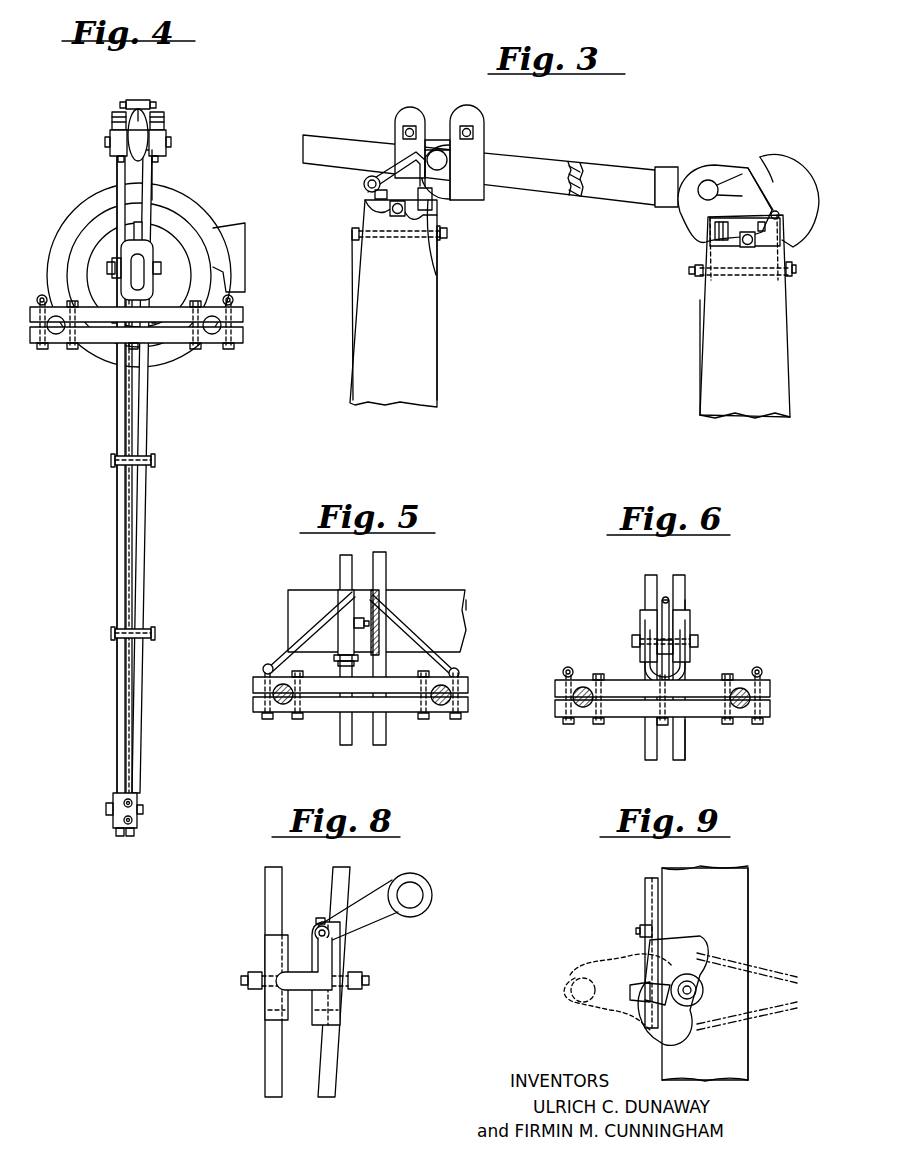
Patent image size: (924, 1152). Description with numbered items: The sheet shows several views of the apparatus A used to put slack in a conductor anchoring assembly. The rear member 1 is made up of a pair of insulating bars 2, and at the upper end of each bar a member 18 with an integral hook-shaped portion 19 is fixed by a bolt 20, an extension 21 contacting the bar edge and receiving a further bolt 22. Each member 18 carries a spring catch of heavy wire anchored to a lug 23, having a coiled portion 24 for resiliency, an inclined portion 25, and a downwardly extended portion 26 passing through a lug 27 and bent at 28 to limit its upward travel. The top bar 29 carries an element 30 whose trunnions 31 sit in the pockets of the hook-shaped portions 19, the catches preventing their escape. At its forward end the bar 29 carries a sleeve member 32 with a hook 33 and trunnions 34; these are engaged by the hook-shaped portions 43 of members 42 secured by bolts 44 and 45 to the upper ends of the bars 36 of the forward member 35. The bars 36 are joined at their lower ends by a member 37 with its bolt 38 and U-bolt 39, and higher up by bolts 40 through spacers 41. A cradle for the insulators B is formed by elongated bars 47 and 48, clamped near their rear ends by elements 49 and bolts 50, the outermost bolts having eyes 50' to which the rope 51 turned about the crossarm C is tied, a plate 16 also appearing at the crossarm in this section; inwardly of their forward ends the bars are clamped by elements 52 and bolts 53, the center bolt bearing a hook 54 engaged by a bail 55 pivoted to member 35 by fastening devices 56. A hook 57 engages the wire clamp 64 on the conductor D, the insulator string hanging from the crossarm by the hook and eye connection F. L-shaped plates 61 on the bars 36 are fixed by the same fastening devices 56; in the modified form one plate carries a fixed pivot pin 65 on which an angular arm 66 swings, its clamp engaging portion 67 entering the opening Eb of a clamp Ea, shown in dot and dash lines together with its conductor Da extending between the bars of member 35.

In FIG. 3, the member 1 is at (445, 373).
In FIG. 5, the member 1 is at (384, 750).
In FIG. 3, the bars 2 is at (360, 350).
In FIG. 5, the bars 2 is at (345, 745).
In FIG. 5, the plate 16 is at (345, 620).
In FIG. 3, the member 18 is at (370, 203).
In FIG. 3, the hook-shaped portion 19 is at (462, 160).
In FIG. 3, the bolt 20 is at (398, 220).
In FIG. 3, the extension 21 is at (358, 245).
In FIG. 3, the bolt 22 is at (353, 236).
In FIG. 3, the lug 23 is at (372, 196).
In FIG. 3, the coiled portion 24 is at (364, 182).
In FIG. 3, the inclined portion 25 is at (390, 160).
In FIG. 3, the downwardly extended portion 26 is at (430, 205).
In FIG. 3, the lug 27 is at (435, 238).
In FIG. 3, the bent portion 28 is at (428, 240).
In FIG. 3, the bar 29 is at (560, 152).
In FIG. 4, the element 30 is at (133, 100).
In FIG. 3, the element 30 is at (473, 108).
In FIG. 3, the trunnions 31 is at (437, 150).
In FIG. 3, the sleeve member 32 is at (672, 168).
In FIG. 4, the hook 33 is at (120, 142).
In FIG. 3, the hook 33 is at (786, 165).
In FIG. 4, the trunnions 34 is at (112, 119).
In FIG. 3, the trunnions 34 is at (710, 180).
In FIG. 4, the member 35 is at (155, 600).
In FIG. 3, the member 35 is at (695, 391).
In FIG. 6, the member 35 is at (694, 753).
In FIG. 9, the member 35 is at (756, 913).
In FIG. 4, the bars 36 is at (119, 710).
In FIG. 3, the bars 36 is at (708, 355).
In FIG. 6, the bars 36 is at (655, 760).
In FIG. 9, the bars 36 is at (748, 938).
In FIG. 4, the member 37 is at (137, 797).
In FIG. 4, the bolt 38 is at (106, 810).
In FIG. 4, the U-bolt 39 is at (137, 822).
In FIG. 4, the bolts 40 is at (113, 325).
In FIG. 4, the spacers 41 is at (128, 352).
In FIG. 4, the members 42 is at (115, 150).
In FIG. 3, the members 42 is at (732, 240).
In FIG. 4, the hook-shaped portions 43 is at (115, 114).
In FIG. 3, the hook-shaped portions 43 is at (688, 215).
In FIG. 4, the bolt 44 is at (108, 142).
In FIG. 3, the bolt 44 is at (748, 250).
In FIG. 4, the bolt 45 is at (122, 160).
In FIG. 3, the bolt 45 is at (790, 274).
In FIG. 4, the elongated bar 47 is at (56, 335).
In FIG. 5, the elongated bar 47 is at (283, 705).
In FIG. 6, the elongated bar 47 is at (742, 708).
In FIG. 4, the elongated bar 48 is at (212, 335).
In FIG. 5, the elongated bar 48 is at (442, 705).
In FIG. 6, the elongated bar 48 is at (583, 708).
In FIG. 5, the elements 49 is at (253, 700).
In FIG. 5, the bolts 50 is at (367, 711).
In FIG. 5, the eyes 50' is at (376, 635).
In FIG. 5, the flexible element 51 is at (394, 618).
In FIG. 4, the elements 52 is at (243, 334).
In FIG. 6, the elements 52 is at (772, 705).
In FIG. 4, the bolts 53 is at (42, 348).
In FIG. 6, the bolts 53 is at (567, 722).
In FIG. 6, the hook 54 is at (688, 668).
In FIG. 4, the bail 55 is at (110, 267).
In FIG. 6, the bail 55 is at (655, 663).
In FIG. 4, the fastening devices 56 is at (107, 262).
In FIG. 6, the fastening devices 56 is at (635, 638).
In FIG. 8, the fastening devices 56 is at (245, 980).
In FIG. 9, the fastening devices 56 is at (705, 990).
In FIG. 6, the hook 57 is at (658, 648).
In FIG. 6, the L-shaped plates 61 is at (645, 612).
In FIG. 8, the L-shaped plates 61 is at (268, 950).
In FIG. 9, the L-shaped plates 61 is at (672, 1018).
In FIG. 4, the wire clamp 64 is at (130, 275).
In FIG. 8, the fixed pivot pin 65 is at (316, 925).
In FIG. 9, the fixed pivot pin 65 is at (640, 935).
In FIG. 8, the angular arm 66 is at (366, 905).
In FIG. 9, the angular arm 66 is at (645, 895).
In FIG. 8, the clamp engaging portion 67 is at (290, 983).
In FIG. 9, the clamp engaging portion 67 is at (630, 990).
In FIG. 4, the apparatus A is at (160, 515).
In FIG. 3, the apparatus A is at (631, 147).
In FIG. 5, the apparatus A is at (480, 626).
In FIG. 6, the apparatus A is at (704, 649).
In FIG. 4, the insulators B is at (190, 200).
In FIG. 4, the crossarm C is at (242, 224).
In FIG. 5, the crossarm C is at (457, 592).
In FIG. 4, the conductor D is at (150, 255).
In FIG. 6, the conductor D is at (665, 600).
In FIG. 5, the hook and eye connection F is at (345, 655).
In FIG. 9, the clamp Ea is at (612, 1022).
In FIG. 9, the opening Eb is at (625, 962).
In FIG. 9, the conductor Da is at (762, 1015).